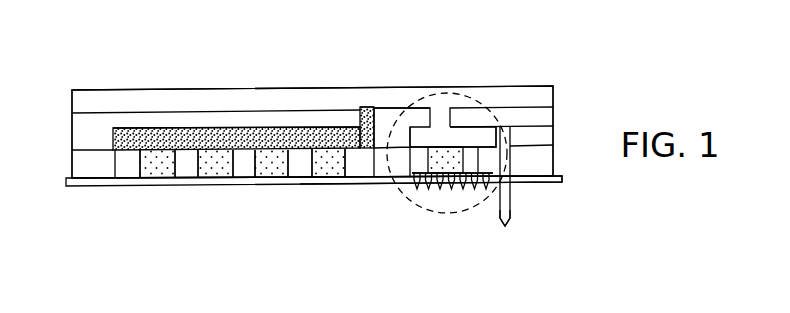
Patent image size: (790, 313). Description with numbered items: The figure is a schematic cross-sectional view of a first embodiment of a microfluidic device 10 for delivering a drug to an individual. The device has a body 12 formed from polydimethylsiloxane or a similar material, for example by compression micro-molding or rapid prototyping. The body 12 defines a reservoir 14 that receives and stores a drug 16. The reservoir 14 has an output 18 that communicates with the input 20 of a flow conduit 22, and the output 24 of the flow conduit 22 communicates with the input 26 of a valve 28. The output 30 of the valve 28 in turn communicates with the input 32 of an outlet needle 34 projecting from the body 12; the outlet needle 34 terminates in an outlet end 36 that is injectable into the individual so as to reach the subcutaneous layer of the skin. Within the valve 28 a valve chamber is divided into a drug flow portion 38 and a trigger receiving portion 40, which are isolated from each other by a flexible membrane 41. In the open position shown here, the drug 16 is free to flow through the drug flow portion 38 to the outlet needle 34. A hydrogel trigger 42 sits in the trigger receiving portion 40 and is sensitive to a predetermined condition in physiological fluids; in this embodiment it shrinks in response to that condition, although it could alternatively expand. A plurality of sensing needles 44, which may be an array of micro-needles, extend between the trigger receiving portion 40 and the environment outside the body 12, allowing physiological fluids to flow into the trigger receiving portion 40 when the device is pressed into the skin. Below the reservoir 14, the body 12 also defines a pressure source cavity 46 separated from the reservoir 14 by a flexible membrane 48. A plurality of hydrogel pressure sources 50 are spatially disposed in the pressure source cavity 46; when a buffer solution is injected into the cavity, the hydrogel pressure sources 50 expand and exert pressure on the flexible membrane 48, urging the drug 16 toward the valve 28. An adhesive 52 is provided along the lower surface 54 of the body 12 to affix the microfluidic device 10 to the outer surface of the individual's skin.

The microfluidic device 10 is at (191, 245).
The body 12 is at (547, 125).
The reservoir 14 is at (128, 130).
The drug 16 is at (194, 130).
The flexible membrane 48 is at (245, 130).
The output 18 is at (361, 107).
The input 20 is at (369, 106).
The flow conduit 22 is at (393, 107).
The output 24 is at (417, 107).
The flexible membrane 41 is at (446, 143).
The drug flow portion 38 is at (483, 136).
The input 26 is at (458, 122).
The output 30 is at (509, 127).
The input 32 is at (511, 136).
The outlet needle 34 is at (512, 189).
The outlet end 36 is at (506, 228).
The hydrogel trigger 42 is at (425, 156).
The trigger receiving portion 40 is at (483, 190).
The sensing needles 44 is at (458, 192).
The valve 28 is at (433, 213).
The pressure source cavity 46 is at (135, 172).
The hydrogel pressure sources 50 is at (213, 169).
The lower surface 54 is at (84, 187).
The adhesive 52 is at (353, 183).